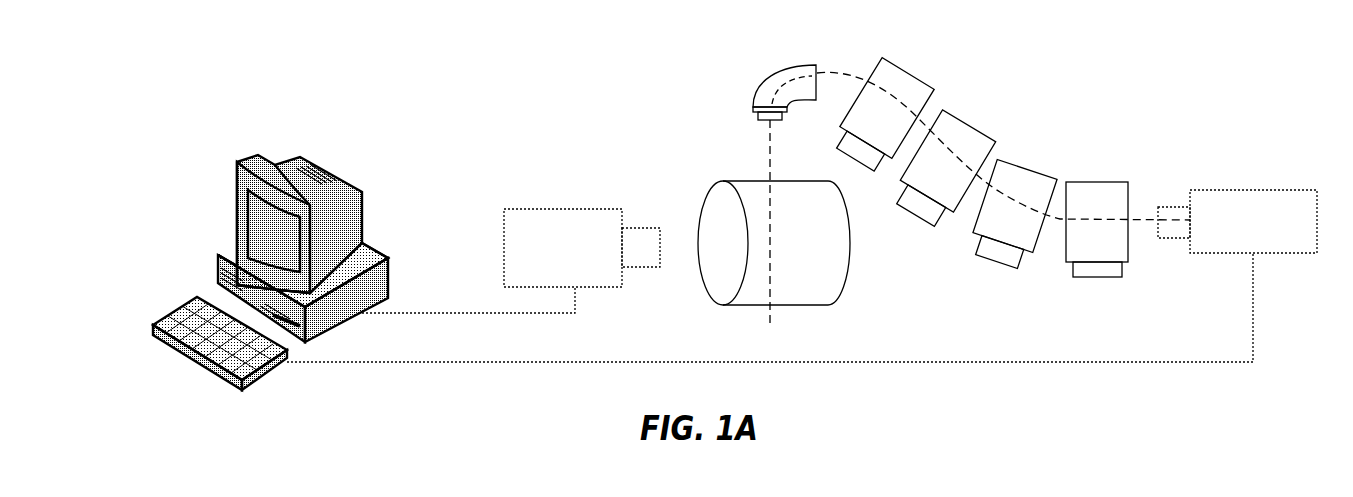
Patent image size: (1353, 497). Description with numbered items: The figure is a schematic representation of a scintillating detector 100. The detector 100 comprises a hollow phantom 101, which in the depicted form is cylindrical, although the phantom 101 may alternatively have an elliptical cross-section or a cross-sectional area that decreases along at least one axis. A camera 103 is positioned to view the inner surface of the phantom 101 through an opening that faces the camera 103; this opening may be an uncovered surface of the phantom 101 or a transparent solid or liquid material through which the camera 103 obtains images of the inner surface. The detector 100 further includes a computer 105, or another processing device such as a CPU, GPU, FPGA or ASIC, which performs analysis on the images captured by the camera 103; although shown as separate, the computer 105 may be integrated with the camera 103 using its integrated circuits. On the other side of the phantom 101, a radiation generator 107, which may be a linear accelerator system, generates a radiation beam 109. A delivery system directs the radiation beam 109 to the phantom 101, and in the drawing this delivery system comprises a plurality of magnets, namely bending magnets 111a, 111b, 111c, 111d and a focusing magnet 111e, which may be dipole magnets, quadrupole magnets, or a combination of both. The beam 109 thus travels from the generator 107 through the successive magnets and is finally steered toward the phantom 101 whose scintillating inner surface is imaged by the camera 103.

The scintillating detector 100 is at (713, 10).
The hollow phantom 101 is at (823, 292).
The camera 103 is at (520, 257).
The computer 105 is at (257, 170).
The radiation generator 107 is at (1198, 200).
The radiation beam 109 is at (1152, 227).
The bending magnet 111a is at (1097, 247).
The bending magnet 111b is at (1002, 237).
The bending magnet 111c is at (932, 183).
The bending magnet 111d is at (918, 92).
The focusing magnet 111e is at (777, 80).